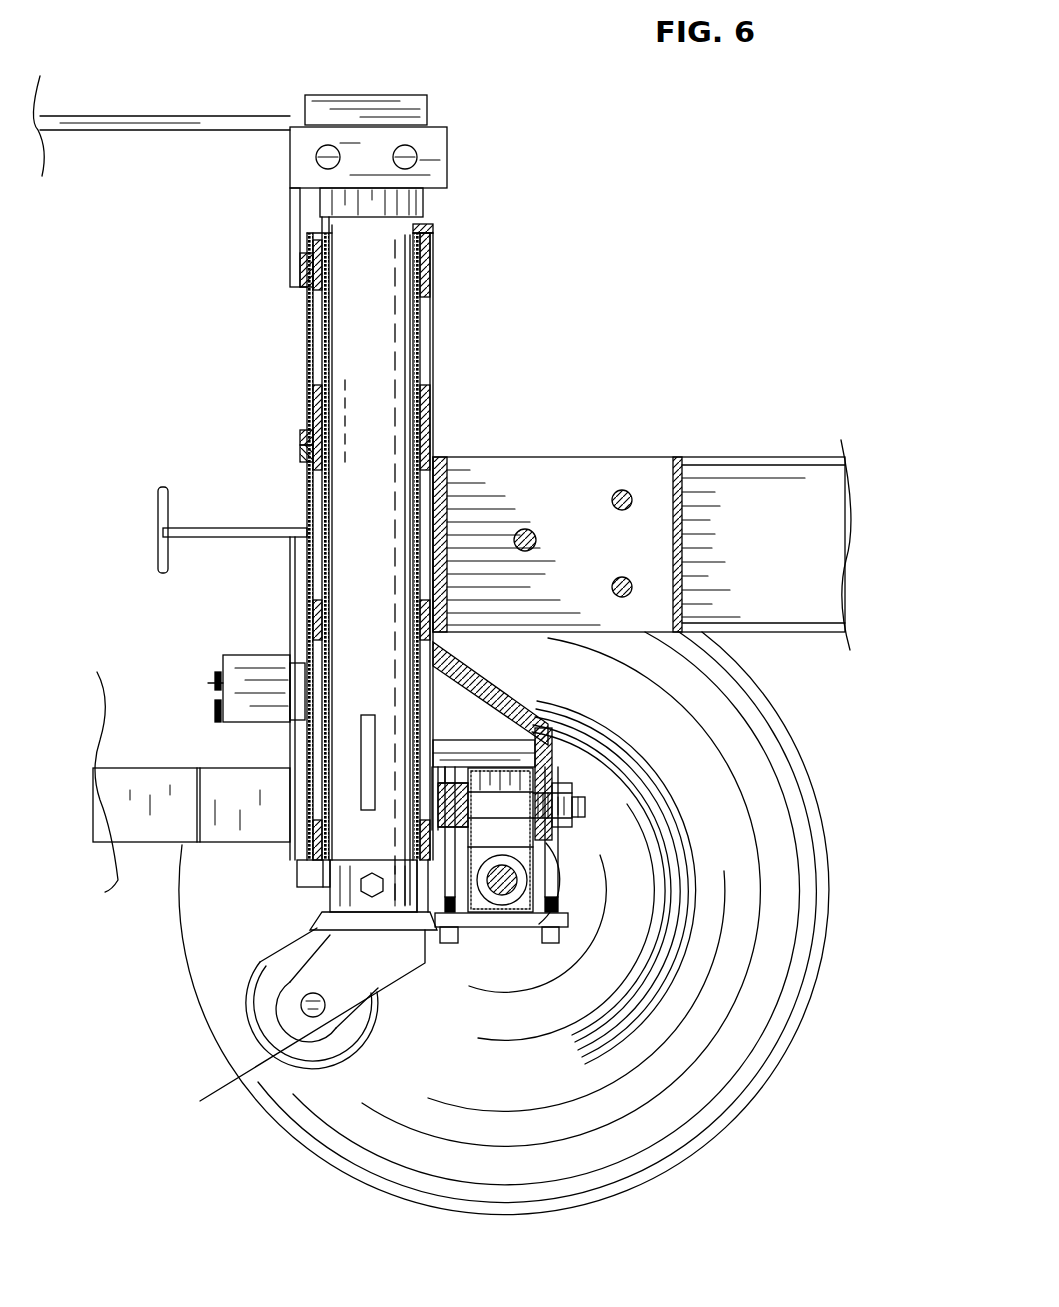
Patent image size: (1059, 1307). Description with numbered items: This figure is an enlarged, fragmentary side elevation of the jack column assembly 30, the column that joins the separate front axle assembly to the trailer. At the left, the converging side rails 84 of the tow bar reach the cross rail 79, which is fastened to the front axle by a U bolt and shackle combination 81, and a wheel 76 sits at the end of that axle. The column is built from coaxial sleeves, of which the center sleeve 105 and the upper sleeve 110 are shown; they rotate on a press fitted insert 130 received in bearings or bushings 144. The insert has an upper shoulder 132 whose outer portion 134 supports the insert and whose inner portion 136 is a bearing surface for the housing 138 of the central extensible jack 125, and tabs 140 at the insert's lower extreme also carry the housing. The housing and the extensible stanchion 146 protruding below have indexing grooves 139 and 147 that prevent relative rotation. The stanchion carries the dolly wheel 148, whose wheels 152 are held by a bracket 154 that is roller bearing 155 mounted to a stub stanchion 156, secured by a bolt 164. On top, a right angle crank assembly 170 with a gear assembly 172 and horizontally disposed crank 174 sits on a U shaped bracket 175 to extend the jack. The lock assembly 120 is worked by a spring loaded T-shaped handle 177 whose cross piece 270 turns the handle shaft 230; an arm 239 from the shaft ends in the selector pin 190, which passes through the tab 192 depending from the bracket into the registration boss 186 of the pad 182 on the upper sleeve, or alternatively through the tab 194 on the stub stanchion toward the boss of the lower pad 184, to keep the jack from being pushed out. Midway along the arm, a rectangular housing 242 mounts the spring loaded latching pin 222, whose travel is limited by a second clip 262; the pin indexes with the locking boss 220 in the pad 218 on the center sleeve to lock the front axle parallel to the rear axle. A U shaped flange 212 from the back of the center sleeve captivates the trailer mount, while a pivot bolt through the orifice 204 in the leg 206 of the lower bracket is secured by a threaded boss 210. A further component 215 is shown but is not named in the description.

The jack column assembly 30 is at (190, 358).
The wheel 76 is at (692, 704).
The cross rail 79 is at (548, 848).
The U bolt and shackle combination 81 is at (572, 932).
The converging side rails 84 is at (120, 800).
The center sleeve 105 is at (437, 425).
The upper sleeve 110 is at (433, 373).
The lock assembly 120 is at (205, 646).
The central extensible jack 125 is at (430, 197).
The press fitted insert 130 is at (374, 356).
The upper shoulder 132 is at (431, 240).
The outer portion of the shoulder 134 is at (439, 232).
The inner portion of the shoulder 136 is at (437, 222).
The housing of the extensible jack 138 is at (433, 345).
The indexing groove 139 is at (363, 757).
The tabs 140 is at (452, 935).
The bearings or bushings 144 is at (427, 276).
The extensible stanchion 146 is at (347, 905).
The indexing groove 147 is at (330, 920).
The dolly wheel 148 is at (283, 1072).
The wheels 152 is at (326, 1014).
The bracket 154 is at (380, 1023).
The roller bearing 155 is at (400, 988).
The stub stanchion 156 is at (270, 1022).
The bolt 164 is at (472, 935).
The right angle crank assembly 170 is at (486, 128).
The gear assembly 172 is at (434, 112).
The horizontally disposed crank 174 is at (106, 118).
The U shaped bracket 175 is at (443, 160).
The spring loaded T-shaped handle 177 is at (157, 570).
The pad 182 is at (300, 290).
The pad 184 is at (298, 840).
The registration boss 186 is at (300, 262).
The selector pin 190 is at (298, 872).
The tab 192 is at (292, 222).
The tab 194 is at (317, 923).
The orifice 204 is at (588, 806).
The leg 206 is at (566, 778).
The threaded boss 210 is at (555, 830).
The U shaped flange 212 is at (612, 452).
The gusset plate 215 is at (455, 652).
The pad 218 is at (302, 432).
The locking boss 220 is at (303, 452).
The latching pin 222 is at (215, 683).
The handle shaft 230 is at (227, 530).
The arm 239 is at (290, 760).
The rectangular housing 242 is at (230, 658).
The second clip 262 is at (215, 716).
The cross piece 270 is at (157, 496).